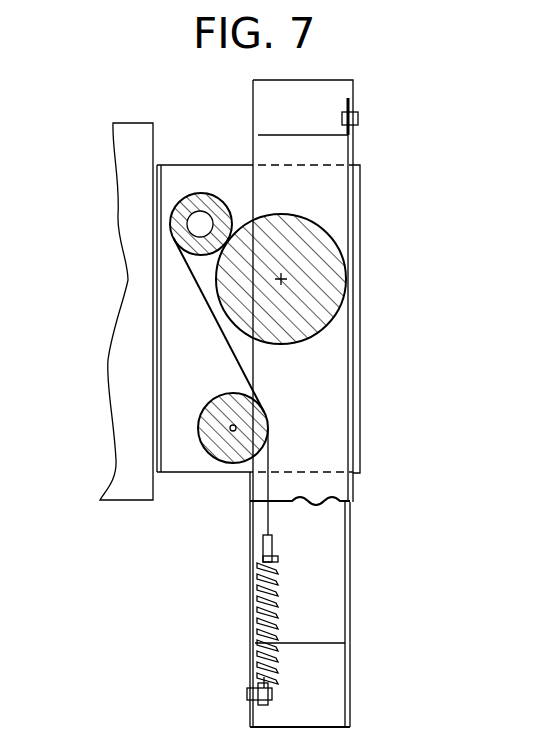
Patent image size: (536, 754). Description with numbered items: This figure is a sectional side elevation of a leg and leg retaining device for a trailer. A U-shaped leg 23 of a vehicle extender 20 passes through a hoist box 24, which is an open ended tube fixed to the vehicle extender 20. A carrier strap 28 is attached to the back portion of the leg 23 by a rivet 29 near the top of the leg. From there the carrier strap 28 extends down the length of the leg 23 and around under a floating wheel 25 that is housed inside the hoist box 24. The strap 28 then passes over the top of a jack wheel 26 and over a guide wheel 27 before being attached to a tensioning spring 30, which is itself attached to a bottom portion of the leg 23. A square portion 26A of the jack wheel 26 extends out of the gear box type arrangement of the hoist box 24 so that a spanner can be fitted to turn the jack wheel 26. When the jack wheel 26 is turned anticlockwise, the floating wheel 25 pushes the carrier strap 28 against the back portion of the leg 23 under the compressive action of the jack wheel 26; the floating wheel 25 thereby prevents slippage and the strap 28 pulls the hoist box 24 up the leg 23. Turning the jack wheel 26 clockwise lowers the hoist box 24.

The vehicle extender 20 is at (135, 128).
The U-shaped leg 23 is at (350, 577).
The hoist box 24 is at (330, 421).
The floating wheel 25 is at (333, 302).
The jack wheel 26 is at (172, 212).
The square portion 26A is at (202, 230).
The guide wheel 27 is at (205, 428).
The carrier strap 28 is at (349, 215).
The rivet 29 is at (358, 121).
The tensioning spring 30 is at (255, 650).